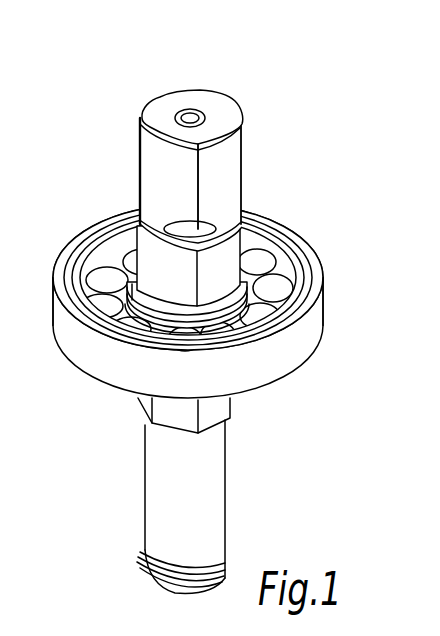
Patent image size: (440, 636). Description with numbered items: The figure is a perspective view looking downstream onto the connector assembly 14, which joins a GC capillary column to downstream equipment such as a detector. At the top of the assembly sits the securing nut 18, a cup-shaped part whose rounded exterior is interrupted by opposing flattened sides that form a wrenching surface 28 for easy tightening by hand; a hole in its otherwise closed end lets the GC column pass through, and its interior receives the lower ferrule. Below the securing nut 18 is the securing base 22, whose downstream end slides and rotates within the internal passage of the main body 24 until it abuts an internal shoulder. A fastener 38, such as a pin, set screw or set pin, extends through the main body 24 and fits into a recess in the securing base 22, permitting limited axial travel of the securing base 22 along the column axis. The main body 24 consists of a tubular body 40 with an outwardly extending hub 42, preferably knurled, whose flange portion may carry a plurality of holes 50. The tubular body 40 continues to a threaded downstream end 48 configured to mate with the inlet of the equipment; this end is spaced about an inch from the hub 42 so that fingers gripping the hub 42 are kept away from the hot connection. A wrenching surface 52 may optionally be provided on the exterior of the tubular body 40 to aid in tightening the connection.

The connector assembly 14 is at (368, 157).
The securing nut 18 is at (218, 100).
The securing base 22 is at (154, 258).
The main body 24 is at (170, 495).
The wrenching surface 28 is at (183, 171).
The fastener 38 is at (288, 373).
The tubular body 40 is at (220, 491).
The hub 42 is at (306, 328).
The downstream end 48 is at (224, 568).
The holes 50 is at (274, 287).
The wrenching surface 52 is at (228, 424).